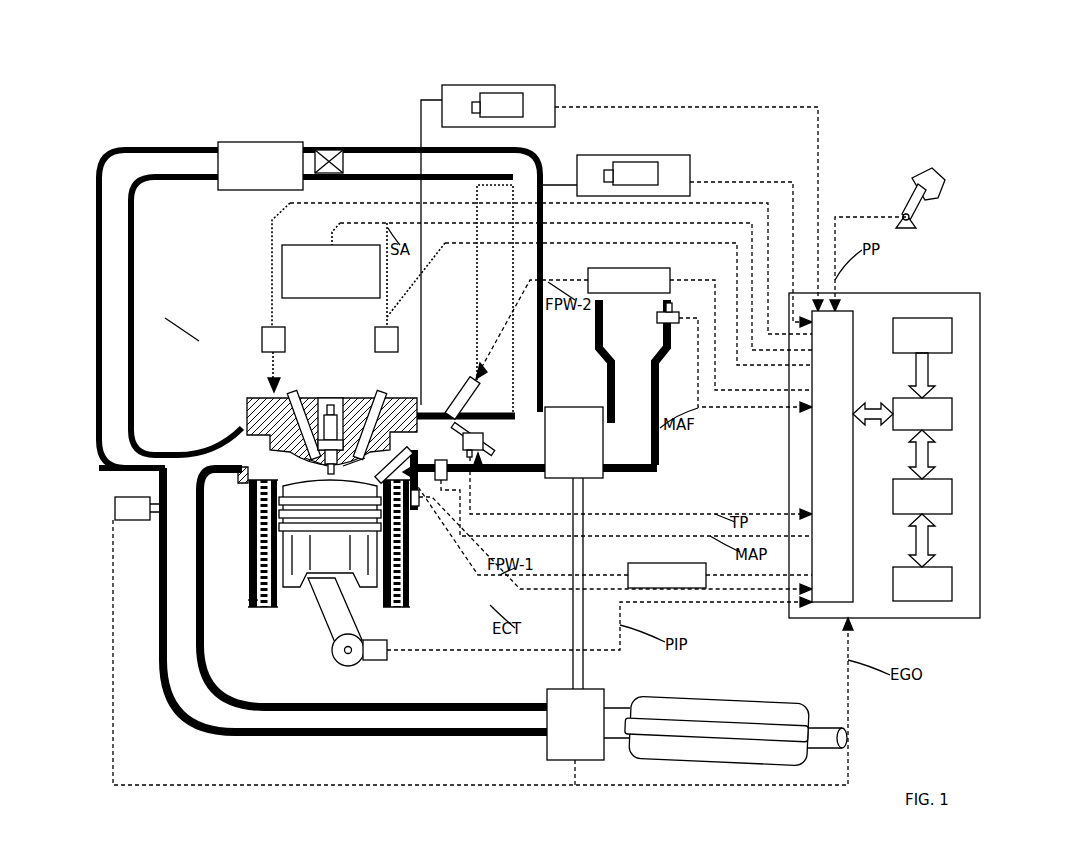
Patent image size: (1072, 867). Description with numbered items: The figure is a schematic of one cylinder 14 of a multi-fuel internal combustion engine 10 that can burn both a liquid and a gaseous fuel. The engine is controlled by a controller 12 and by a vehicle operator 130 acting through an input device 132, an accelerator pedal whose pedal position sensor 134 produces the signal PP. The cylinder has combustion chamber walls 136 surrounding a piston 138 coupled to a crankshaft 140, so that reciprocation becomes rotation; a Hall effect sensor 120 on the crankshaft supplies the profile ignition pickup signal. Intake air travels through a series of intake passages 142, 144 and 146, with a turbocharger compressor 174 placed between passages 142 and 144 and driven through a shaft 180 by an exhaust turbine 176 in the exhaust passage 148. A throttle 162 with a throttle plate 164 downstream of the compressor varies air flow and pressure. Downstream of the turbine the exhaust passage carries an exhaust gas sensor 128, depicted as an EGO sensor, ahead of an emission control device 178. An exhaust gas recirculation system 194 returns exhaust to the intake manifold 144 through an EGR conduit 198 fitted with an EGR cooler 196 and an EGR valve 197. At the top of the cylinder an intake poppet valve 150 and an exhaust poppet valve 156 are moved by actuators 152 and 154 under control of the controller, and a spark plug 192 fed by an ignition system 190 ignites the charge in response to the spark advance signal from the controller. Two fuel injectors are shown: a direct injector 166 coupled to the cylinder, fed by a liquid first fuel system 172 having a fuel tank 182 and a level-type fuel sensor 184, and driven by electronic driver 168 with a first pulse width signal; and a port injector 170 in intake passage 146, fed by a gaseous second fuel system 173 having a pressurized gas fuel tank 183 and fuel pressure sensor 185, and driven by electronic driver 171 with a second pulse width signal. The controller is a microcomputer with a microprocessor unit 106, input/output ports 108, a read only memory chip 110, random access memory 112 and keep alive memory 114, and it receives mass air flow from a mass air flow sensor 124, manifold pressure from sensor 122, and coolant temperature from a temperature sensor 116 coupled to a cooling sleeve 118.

The internal combustion engine 10 is at (177, 324).
The controller 12 is at (980, 293).
The cylinder 14 is at (275, 495).
The microprocessor unit 106 is at (952, 412).
The input/output ports 108 is at (853, 318).
The read only memory chip 110 is at (952, 335).
The random access memory 112 is at (952, 497).
The keep alive memory 114 is at (952, 582).
The temperature sensor 116 is at (418, 505).
The cooling sleeve 118 is at (405, 560).
The Hall effect sensor 120 is at (385, 660).
The manifold pressure sensor 122 is at (675, 312).
The mass air flow sensor 124 is at (447, 480).
The exhaust gas sensor 128 is at (115, 503).
The vehicle operator 130 is at (935, 182).
The input device 132 is at (900, 192).
The pedal position sensor 134 is at (912, 222).
The combustion chamber walls 136 is at (265, 607).
The piston 138 is at (320, 572).
The crankshaft 140 is at (335, 660).
The intake air passage 142 is at (633, 382).
The intake passage 144 is at (582, 450).
The intake air passage 146 is at (480, 442).
The exhaust passage 148 is at (323, 586).
The intake poppet valve 150 is at (386, 352).
The actuator 152 is at (376, 338).
The actuator 154 is at (262, 335).
The exhaust poppet valve 156 is at (258, 420).
The throttle 162 is at (483, 420).
The throttle plate 164 is at (616, 309).
The fuel injector 166 is at (501, 511).
The electronic driver 168 is at (632, 563).
The fuel injector 170 is at (510, 349).
The electronic driver 171 is at (588, 275).
The first fuel system 172 is at (560, 70).
The second fuel system 173 is at (690, 156).
The compressor 174 is at (557, 407).
The exhaust turbine 176 is at (547, 755).
The emission control device 178 is at (820, 690).
The shaft 180 is at (585, 660).
The fuel tank 182 is at (500, 93).
The pressurized gas fuel tank 183 is at (638, 162).
The fuel sensor 184 is at (475, 102).
The fuel pressure sensor 185 is at (604, 172).
The ignition system 190 is at (300, 245).
The spark plug 192 is at (332, 298).
The exhaust gas recirculation system 194 is at (80, 213).
The EGR cooler 196 is at (258, 142).
The EGR valve 197 is at (330, 150).
The EGR conduit 198 is at (403, 148).